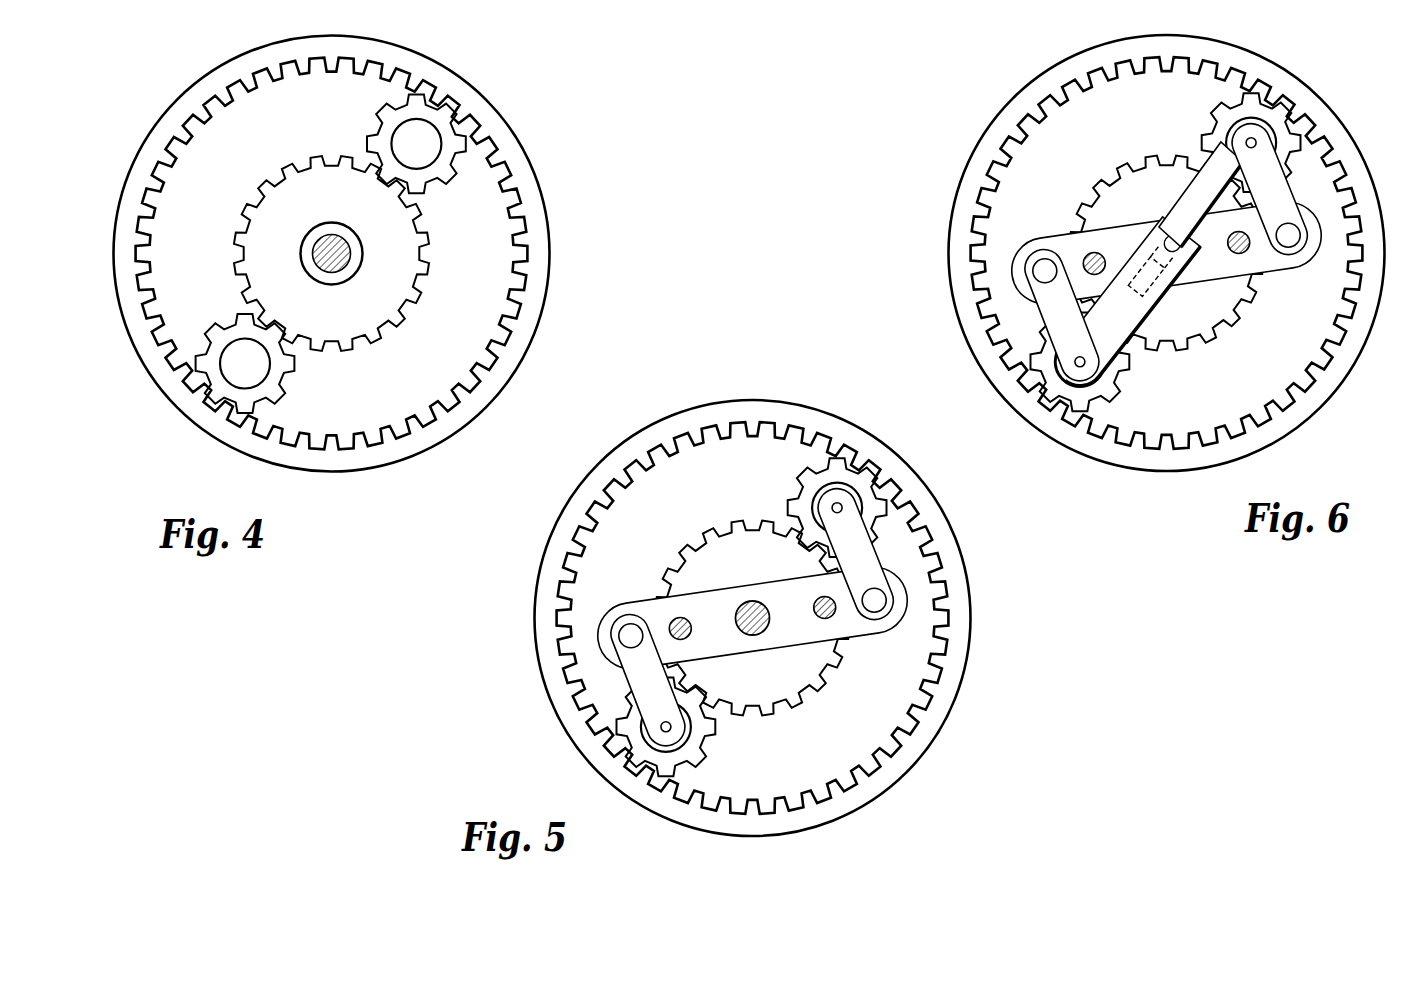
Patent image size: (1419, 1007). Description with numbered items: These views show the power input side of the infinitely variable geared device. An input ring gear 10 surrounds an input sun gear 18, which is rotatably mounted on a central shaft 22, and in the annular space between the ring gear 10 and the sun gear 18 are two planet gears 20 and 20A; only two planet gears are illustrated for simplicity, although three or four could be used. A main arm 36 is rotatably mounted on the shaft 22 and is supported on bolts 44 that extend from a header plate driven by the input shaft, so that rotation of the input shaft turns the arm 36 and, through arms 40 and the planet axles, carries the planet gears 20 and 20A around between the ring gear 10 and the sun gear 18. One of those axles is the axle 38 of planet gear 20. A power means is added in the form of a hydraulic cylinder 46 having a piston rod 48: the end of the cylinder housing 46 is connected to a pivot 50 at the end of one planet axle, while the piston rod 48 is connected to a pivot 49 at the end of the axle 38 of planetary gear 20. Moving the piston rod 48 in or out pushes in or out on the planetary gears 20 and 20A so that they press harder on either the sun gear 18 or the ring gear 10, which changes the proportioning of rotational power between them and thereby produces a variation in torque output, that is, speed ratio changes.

In FIG. 4, the ring gear 10 is at (474, 113).
In FIG. 5, the ring gear 10 is at (753, 618).
In FIG. 6, the ring gear 10 is at (1258, 75).
In FIG. 4, the sun gear 18 is at (375, 304).
In FIG. 5, the sun gear 18 is at (697, 568).
In FIG. 6, the sun gear 18 is at (1103, 205).
In FIG. 4, the planet gear 20 is at (423, 170).
In FIG. 5, the planet gear 20 is at (797, 486).
In FIG. 6, the planet gear 20 is at (1228, 120).
In FIG. 4, the planet gear 20A is at (268, 382).
In FIG. 5, the planet gear 20A is at (695, 726).
In FIG. 6, the planet gear 20A is at (1047, 373).
In FIG. 4, the shaft 22 is at (320, 240).
In FIG. 5, the shaft 22 is at (753, 613).
In FIG. 5, the arm 36 is at (785, 632).
In FIG. 6, the arm 36 is at (1207, 272).
In FIG. 5, the axle 38 is at (841, 503).
In FIG. 5, the arms 40 is at (858, 563).
In FIG. 6, the arms 40 is at (1053, 323).
In FIG. 5, the bolts 44 is at (678, 616).
In FIG. 6, the bolts 44 is at (1090, 263).
In FIG. 6, the hydraulic cylinder 46 is at (1113, 333).
In FIG. 6, the piston rod 48 is at (1205, 202).
In FIG. 6, the pivot 49 is at (1257, 145).
In FIG. 6, the pivot 50 is at (1086, 370).